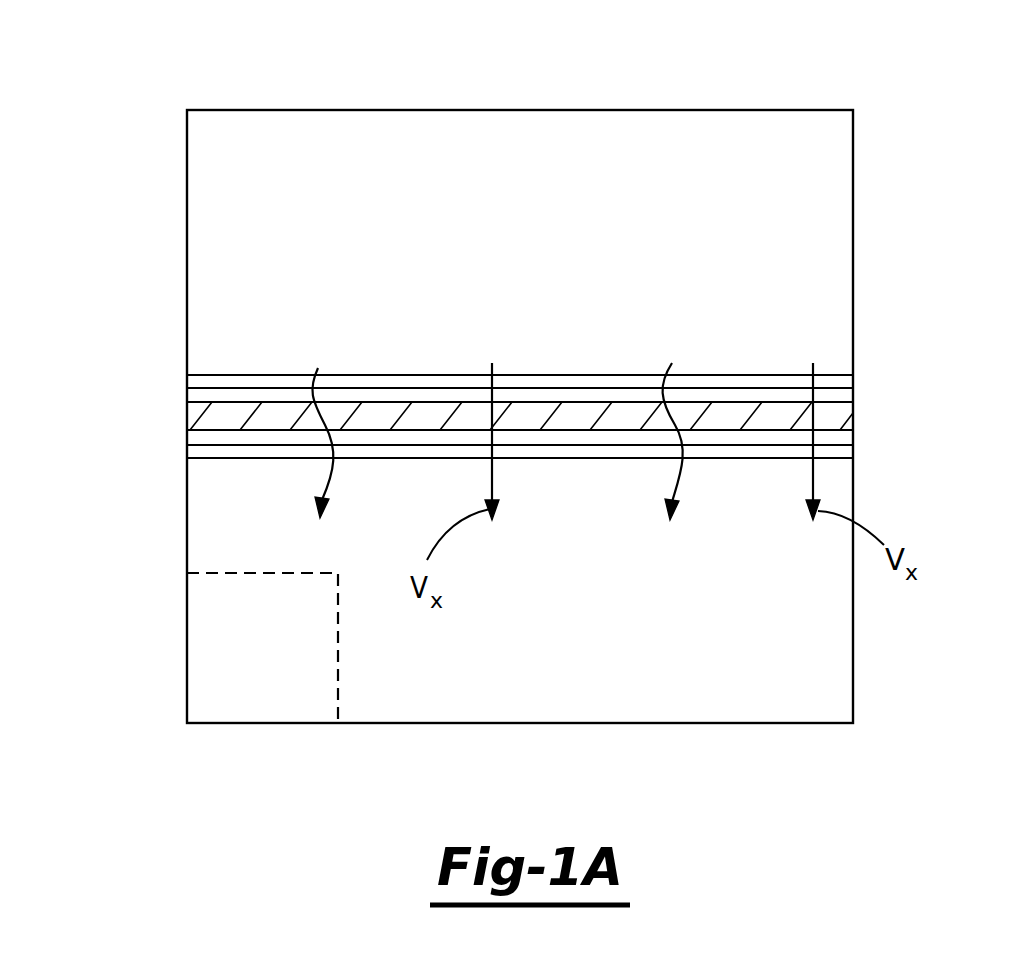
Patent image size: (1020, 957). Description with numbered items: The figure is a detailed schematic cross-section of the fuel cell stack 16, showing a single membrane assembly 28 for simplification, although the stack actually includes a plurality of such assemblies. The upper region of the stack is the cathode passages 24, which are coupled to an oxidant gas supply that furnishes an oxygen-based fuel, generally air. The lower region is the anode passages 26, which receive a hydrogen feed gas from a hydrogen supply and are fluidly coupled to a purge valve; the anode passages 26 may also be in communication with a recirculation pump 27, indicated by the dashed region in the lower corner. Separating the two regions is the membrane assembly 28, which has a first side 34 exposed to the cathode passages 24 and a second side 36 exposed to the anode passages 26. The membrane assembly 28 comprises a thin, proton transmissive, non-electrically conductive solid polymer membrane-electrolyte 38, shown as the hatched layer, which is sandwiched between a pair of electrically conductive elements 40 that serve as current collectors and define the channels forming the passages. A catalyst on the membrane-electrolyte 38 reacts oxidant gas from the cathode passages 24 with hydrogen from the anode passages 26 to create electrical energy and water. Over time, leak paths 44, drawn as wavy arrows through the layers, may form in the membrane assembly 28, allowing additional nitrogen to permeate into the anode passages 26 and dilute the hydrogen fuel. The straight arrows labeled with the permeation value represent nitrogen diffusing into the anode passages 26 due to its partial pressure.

The fuel cell stack 16 is at (522, 105).
The cathode passages 24 is at (186, 307).
The electrically conductive elements 40 is at (248, 375).
The first side 34 is at (232, 397).
The membrane-electrolyte 38 is at (233, 412).
The second side 36 is at (260, 432).
The membrane assembly 28 is at (557, 488).
The leak paths 44 is at (324, 509).
The anode passages 26 is at (186, 628).
The recirculation pump 27 is at (258, 678).